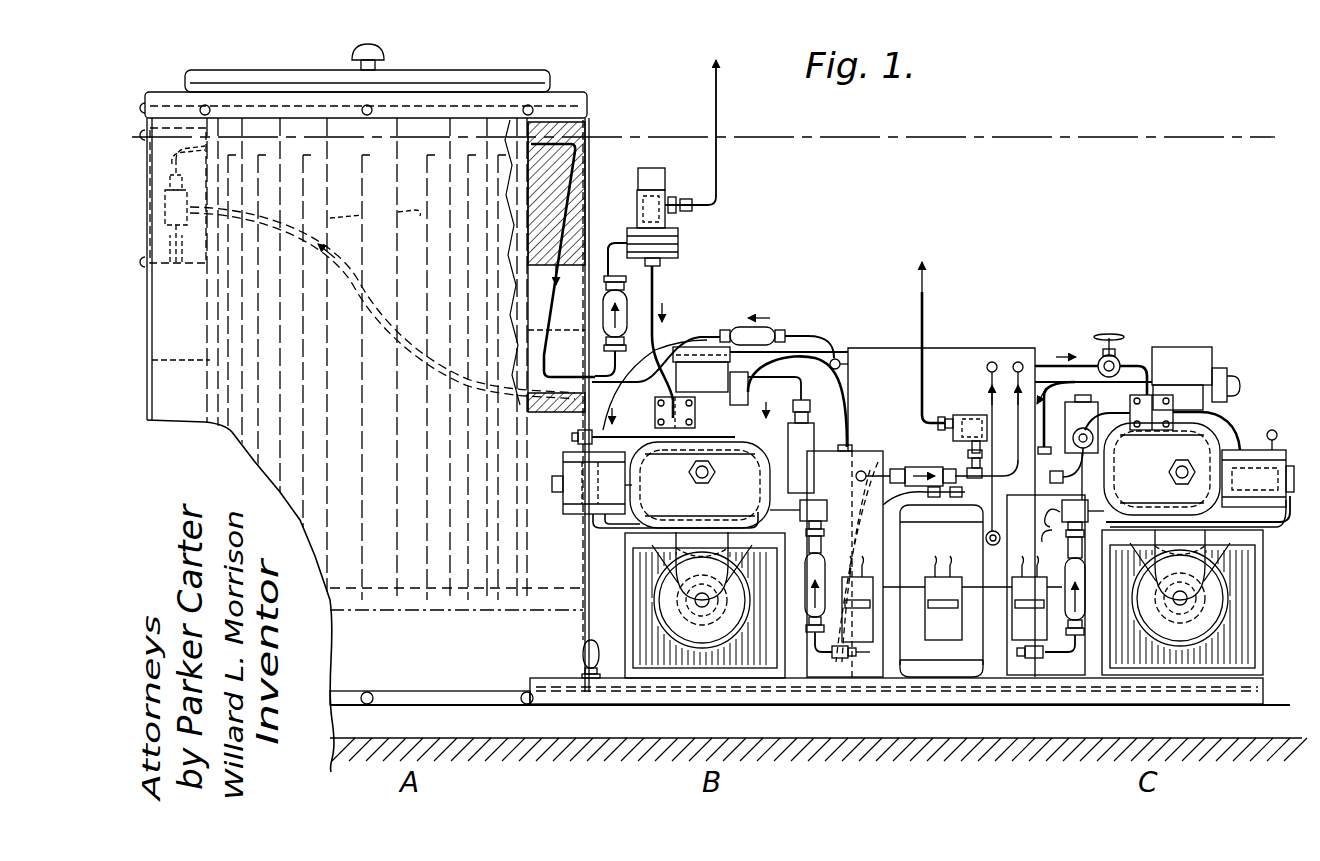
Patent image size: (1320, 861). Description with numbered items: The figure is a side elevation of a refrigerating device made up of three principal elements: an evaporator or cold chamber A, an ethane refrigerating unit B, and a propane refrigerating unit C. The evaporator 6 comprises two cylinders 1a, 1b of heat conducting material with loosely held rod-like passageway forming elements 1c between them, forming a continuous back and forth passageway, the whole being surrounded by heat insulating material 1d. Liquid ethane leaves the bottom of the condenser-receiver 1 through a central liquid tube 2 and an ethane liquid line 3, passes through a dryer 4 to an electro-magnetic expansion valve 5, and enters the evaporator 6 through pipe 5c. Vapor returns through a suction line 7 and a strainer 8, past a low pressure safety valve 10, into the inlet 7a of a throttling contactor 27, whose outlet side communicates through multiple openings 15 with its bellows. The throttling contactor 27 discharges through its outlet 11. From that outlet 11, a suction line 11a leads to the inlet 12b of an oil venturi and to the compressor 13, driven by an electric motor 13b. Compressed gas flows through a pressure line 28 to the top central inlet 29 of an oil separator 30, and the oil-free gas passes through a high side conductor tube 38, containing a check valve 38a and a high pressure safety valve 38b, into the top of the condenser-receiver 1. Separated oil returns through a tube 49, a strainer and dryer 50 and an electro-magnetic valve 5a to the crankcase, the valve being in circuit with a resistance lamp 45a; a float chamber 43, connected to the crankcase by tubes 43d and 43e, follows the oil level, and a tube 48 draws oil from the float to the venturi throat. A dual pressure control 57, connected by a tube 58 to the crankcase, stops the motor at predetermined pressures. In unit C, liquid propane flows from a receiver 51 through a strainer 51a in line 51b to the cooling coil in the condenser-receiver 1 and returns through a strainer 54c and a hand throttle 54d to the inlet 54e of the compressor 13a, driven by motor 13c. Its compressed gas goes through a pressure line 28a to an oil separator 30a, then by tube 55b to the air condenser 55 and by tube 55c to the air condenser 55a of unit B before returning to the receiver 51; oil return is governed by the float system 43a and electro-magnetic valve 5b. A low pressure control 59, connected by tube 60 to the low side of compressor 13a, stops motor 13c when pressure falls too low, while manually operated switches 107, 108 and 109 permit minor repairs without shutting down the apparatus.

The condenser-receiver 1 is at (900, 350).
The cylinder 1a is at (210, 312).
The cylinder 1b is at (208, 358).
The passageway forming elements 1c is at (375, 208).
The heat insulating material 1d is at (572, 232).
The central liquid tube 2 is at (135, 132).
The ethane liquid line 3 is at (846, 334).
The dryer 4 is at (760, 329).
The electro-magnetic expansion valve 5 is at (165, 207).
The electro-magnetic valve 5a is at (816, 500).
The electro-magnetic valve 5b is at (1062, 506).
The pipe 5c is at (185, 146).
The evaporator 6 is at (263, 128).
The suction line 7 is at (575, 184).
The inlet of throttling contactor 7a is at (680, 250).
The strainer 8 is at (628, 306).
The low pressure safety valve 10 is at (673, 198).
The outlet of throttling contactor 11 is at (656, 270).
The suction line 11a is at (656, 292).
The inlet of oil venturi 12b is at (676, 430).
The compressor 13 is at (695, 348).
The compressor 13a is at (1200, 347).
The electric motor 13b is at (718, 640).
The electric motor 13c is at (1168, 632).
The multiple openings 15 is at (692, 416).
The throttling contactor 27 is at (680, 238).
The pressure line 28 is at (849, 386).
The pressure line 28a is at (1090, 364).
The top central inlet 29 is at (852, 445).
The oil separator 30 is at (862, 453).
The oil separator 30a is at (1060, 666).
The high side conductor tube 38 is at (1017, 362).
The check valve 38a is at (938, 459).
The high pressure safety valve 38b is at (973, 416).
The float chamber 43 is at (580, 516).
The float system 43a is at (1270, 460).
The tube 43d is at (700, 521).
The tube 43e is at (608, 532).
The resistance lamp 45a is at (580, 655).
The tube 48 is at (578, 433).
The tube 49 is at (838, 660).
The strainer and dryer 50 is at (826, 568).
The receiver 51 is at (936, 652).
The strainer 51a is at (985, 541).
The line 51b is at (988, 362).
The strainer 54c is at (1130, 364).
The hand throttle 54d is at (1116, 333).
The inlet 54e is at (1175, 398).
The air condenser 55 is at (1215, 652).
The air condenser 55a is at (668, 650).
The tube 55b is at (1167, 511).
The tube 55c is at (698, 692).
The dual pressure control 57 is at (818, 430).
The tube 58 is at (818, 334).
The low pressure control 59 is at (1078, 400).
The tube 60 is at (1112, 418).
The manually operated switch 107 is at (858, 645).
The manually operated switch 108 is at (950, 636).
The manually operated switch 109 is at (1020, 636).